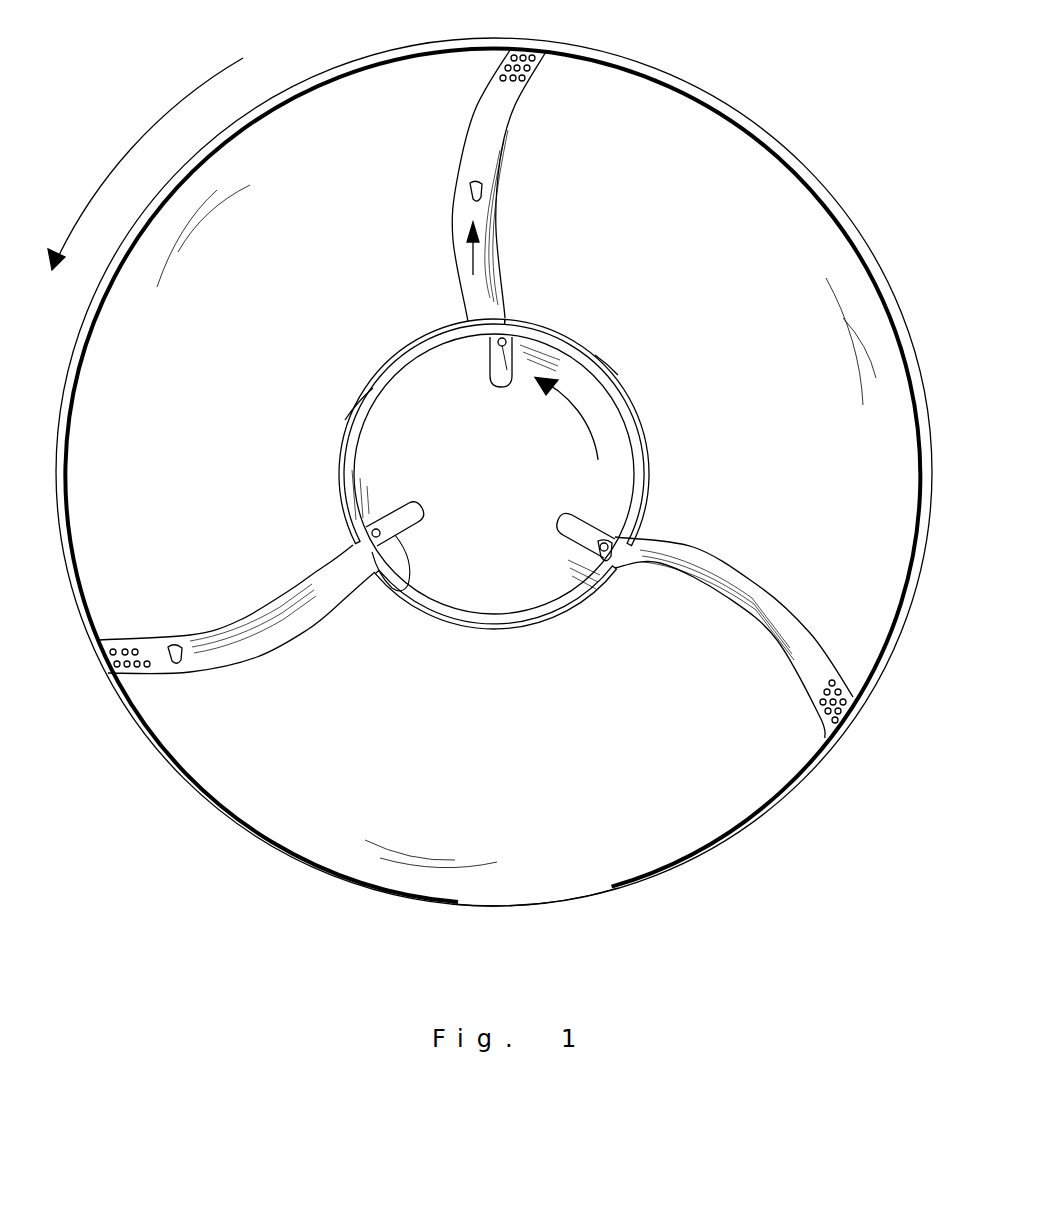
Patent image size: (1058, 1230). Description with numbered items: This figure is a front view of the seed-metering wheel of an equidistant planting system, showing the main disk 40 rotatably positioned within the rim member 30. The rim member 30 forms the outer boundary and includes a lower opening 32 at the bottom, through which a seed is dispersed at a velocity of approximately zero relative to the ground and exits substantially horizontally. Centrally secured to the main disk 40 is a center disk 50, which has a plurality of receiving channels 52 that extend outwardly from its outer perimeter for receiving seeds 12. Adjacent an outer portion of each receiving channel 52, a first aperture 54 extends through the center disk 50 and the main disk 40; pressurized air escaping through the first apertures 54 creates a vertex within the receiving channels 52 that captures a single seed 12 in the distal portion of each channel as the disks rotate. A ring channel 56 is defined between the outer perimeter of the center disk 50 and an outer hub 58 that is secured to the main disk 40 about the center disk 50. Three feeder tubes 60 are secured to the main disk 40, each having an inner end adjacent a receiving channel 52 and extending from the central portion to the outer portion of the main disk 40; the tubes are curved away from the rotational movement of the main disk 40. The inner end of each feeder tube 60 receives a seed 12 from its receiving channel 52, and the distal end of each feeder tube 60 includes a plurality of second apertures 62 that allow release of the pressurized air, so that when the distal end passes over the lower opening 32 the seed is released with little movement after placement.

The seed 12 is at (466, 192).
The rim member 30 is at (745, 858).
The lower opening 32 is at (576, 903).
The main disk 40 is at (690, 163).
The center disk 50 is at (603, 472).
The receiving channel 52 is at (507, 362).
The first aperture 54 is at (502, 338).
The ring channel 56 is at (372, 400).
The outer hub 58 is at (603, 366).
The feeder tube 60 is at (822, 652).
The second aperture 62 is at (834, 722).